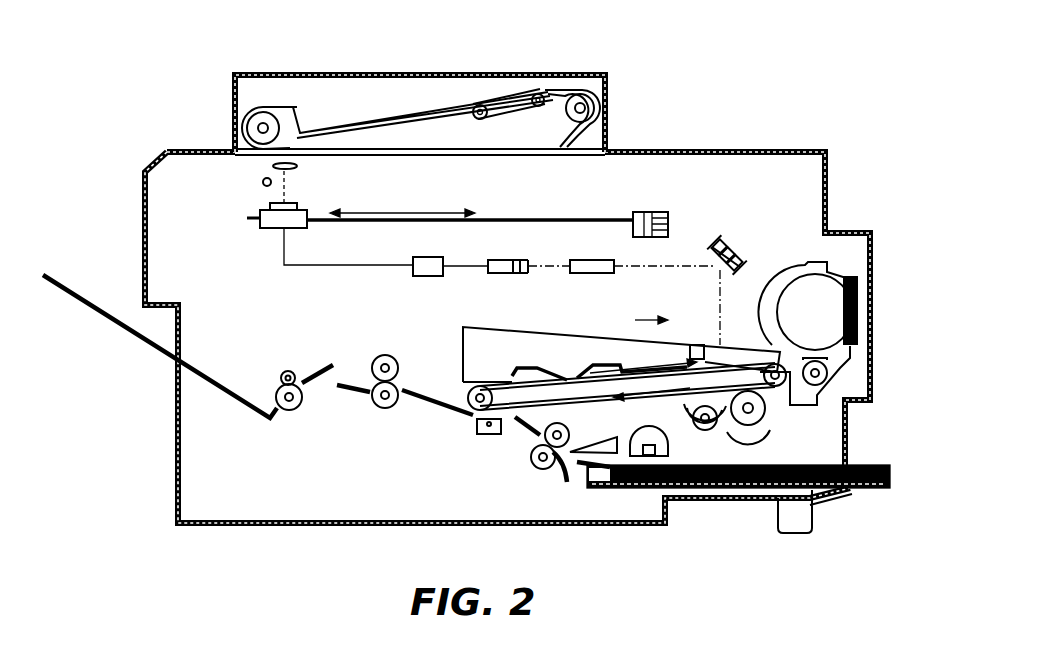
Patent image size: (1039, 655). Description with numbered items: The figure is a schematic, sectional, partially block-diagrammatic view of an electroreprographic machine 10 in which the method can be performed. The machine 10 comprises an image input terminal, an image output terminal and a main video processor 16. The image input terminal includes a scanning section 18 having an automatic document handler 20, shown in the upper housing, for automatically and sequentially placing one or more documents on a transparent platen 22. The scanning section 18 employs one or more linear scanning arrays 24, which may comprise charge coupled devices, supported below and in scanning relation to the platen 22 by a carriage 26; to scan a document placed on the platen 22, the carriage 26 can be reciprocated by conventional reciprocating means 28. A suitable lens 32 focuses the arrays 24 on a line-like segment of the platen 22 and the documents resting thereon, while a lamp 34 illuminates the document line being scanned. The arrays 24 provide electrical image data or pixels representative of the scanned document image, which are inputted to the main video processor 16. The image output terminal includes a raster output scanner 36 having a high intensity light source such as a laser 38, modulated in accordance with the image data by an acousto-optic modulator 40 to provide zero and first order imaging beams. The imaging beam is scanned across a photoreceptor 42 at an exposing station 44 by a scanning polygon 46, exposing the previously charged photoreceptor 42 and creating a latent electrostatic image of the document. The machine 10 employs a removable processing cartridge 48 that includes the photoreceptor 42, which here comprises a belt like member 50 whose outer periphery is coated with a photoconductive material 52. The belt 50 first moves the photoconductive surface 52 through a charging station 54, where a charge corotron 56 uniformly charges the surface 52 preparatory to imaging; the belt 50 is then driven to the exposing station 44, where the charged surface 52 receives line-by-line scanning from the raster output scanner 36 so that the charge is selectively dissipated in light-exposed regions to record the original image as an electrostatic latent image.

The electroreprographic machine 10 is at (163, 552).
The main video processor 16 is at (425, 278).
The scanning section 18 is at (367, 104).
The automatic document handler 20 is at (365, 72).
The transparent platen 22 is at (433, 154).
The linear scanning arrays 24 is at (268, 207).
The carriage 26 is at (272, 230).
The reciprocating means 28 is at (533, 204).
The lens 32 is at (292, 170).
The lamp 34 is at (273, 193).
The raster output scanner 36 is at (683, 250).
The laser 38 is at (508, 275).
The acousto-optic modulator 40 is at (590, 275).
The photoreceptor 42 is at (628, 406).
The exposing station 44 is at (753, 340).
The scanning polygon 46 is at (737, 243).
The removable processing cartridge 48 is at (505, 327).
The belt like member 50 is at (543, 402).
The photoconductive material 52 is at (628, 398).
The charging station 54 is at (680, 350).
The charge corotron 56 is at (697, 345).